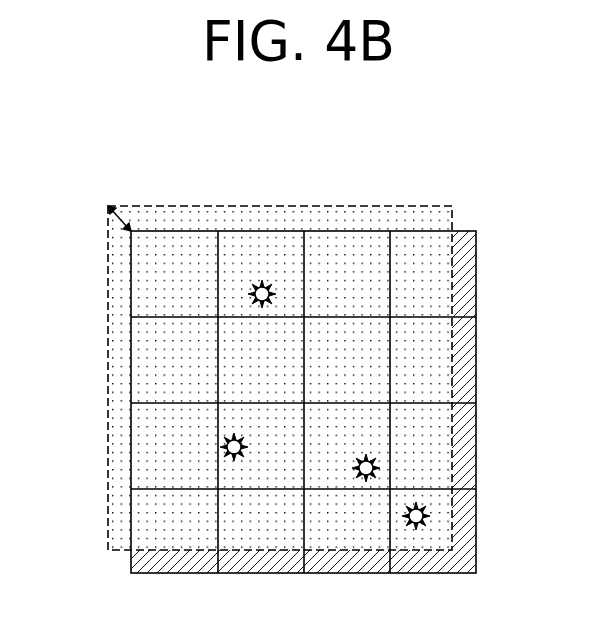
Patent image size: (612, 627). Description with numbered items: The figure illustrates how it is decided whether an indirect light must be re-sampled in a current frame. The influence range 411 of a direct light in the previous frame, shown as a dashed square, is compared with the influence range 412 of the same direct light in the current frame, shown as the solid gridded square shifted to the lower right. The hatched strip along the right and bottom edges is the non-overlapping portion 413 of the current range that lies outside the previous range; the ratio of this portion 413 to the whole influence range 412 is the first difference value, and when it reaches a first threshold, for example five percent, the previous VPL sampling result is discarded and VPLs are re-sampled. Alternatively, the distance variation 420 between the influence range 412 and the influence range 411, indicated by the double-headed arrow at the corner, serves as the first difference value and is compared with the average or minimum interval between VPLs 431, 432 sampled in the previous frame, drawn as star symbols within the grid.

The influence range of the direct light in the previous frame 411 is at (403, 208).
The influence range of the direct light in the current frame 412 is at (476, 258).
The non-overlapping portion 413 is at (447, 565).
The distance variation 420 is at (118, 222).
The VPL 431 is at (420, 512).
The VPL 432 is at (372, 458).